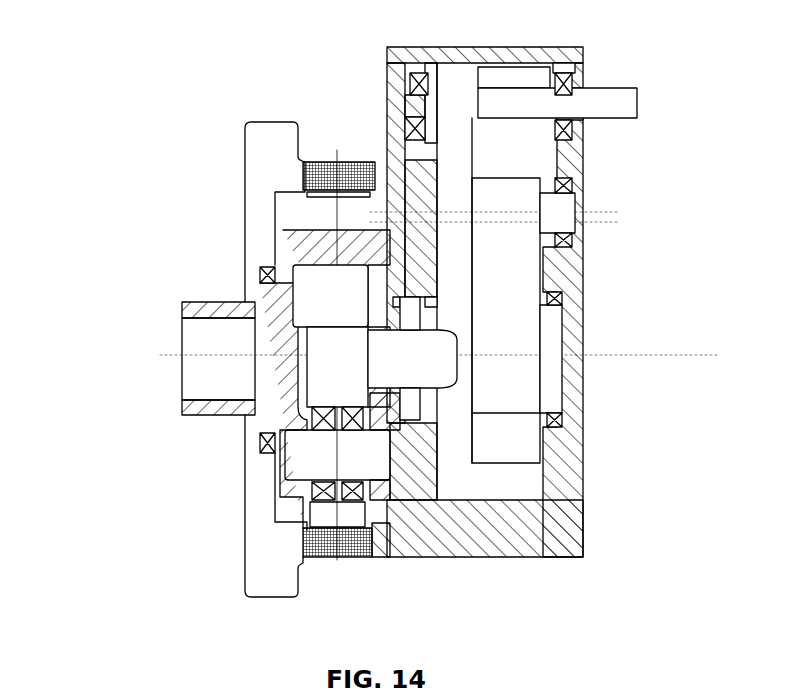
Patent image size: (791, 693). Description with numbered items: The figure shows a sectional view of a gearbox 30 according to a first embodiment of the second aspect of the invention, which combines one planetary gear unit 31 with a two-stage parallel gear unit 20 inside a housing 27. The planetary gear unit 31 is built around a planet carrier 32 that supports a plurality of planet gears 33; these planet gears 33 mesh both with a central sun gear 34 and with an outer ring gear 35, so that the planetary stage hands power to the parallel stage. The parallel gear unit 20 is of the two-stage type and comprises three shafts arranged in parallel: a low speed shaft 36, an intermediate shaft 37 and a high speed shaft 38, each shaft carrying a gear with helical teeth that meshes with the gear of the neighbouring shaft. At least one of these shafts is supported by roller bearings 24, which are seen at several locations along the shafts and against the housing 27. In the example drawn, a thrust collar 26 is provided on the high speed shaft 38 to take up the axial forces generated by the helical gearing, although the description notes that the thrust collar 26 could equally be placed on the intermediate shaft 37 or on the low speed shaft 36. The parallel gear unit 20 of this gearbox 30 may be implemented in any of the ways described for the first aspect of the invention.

The parallel gear unit 20 is at (484, 570).
The roller bearings 24 is at (417, 130).
The thrust collar 26 is at (428, 80).
The housing 27 is at (568, 62).
The gearbox 30 is at (163, 62).
The planetary gear unit 31 is at (333, 567).
The planet carrier 32 is at (262, 298).
The planet gears 33 is at (330, 515).
The sun gear 34 is at (322, 350).
The ring gear 35 is at (330, 178).
The low speed shaft 36 is at (552, 332).
The intermediate shaft 37 is at (553, 203).
The high speed shaft 38 is at (617, 100).